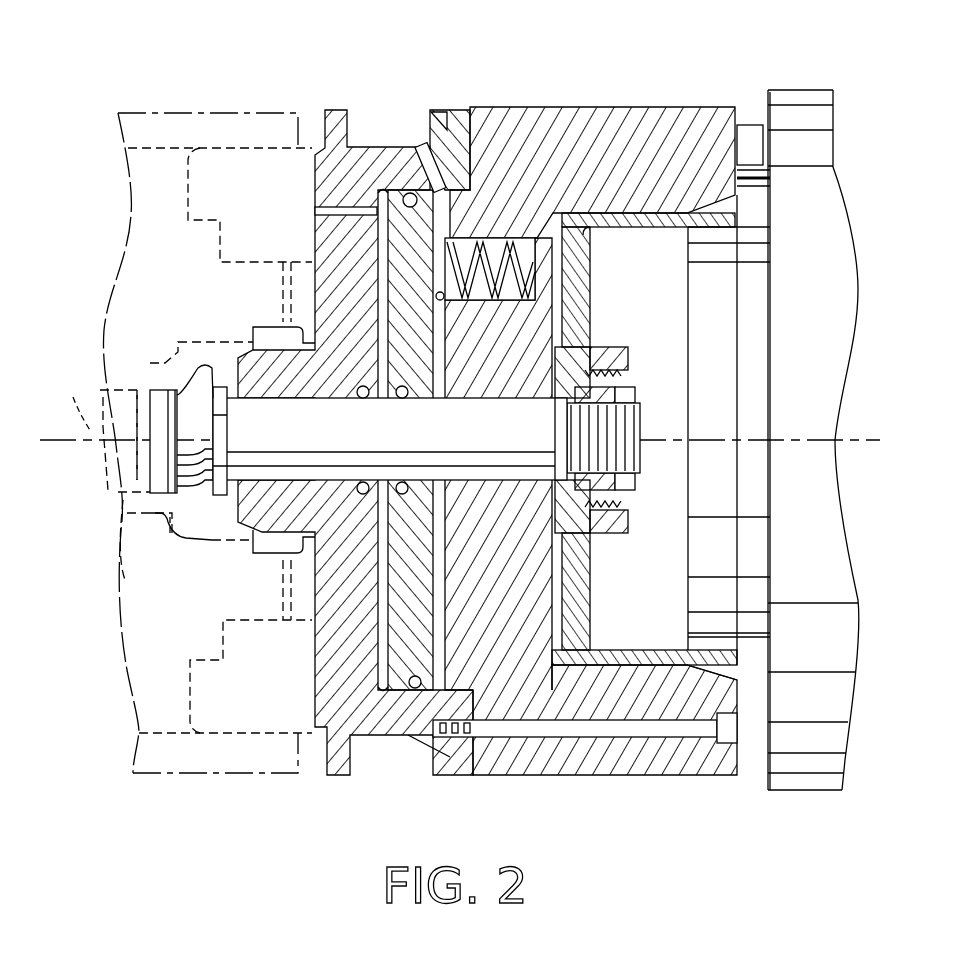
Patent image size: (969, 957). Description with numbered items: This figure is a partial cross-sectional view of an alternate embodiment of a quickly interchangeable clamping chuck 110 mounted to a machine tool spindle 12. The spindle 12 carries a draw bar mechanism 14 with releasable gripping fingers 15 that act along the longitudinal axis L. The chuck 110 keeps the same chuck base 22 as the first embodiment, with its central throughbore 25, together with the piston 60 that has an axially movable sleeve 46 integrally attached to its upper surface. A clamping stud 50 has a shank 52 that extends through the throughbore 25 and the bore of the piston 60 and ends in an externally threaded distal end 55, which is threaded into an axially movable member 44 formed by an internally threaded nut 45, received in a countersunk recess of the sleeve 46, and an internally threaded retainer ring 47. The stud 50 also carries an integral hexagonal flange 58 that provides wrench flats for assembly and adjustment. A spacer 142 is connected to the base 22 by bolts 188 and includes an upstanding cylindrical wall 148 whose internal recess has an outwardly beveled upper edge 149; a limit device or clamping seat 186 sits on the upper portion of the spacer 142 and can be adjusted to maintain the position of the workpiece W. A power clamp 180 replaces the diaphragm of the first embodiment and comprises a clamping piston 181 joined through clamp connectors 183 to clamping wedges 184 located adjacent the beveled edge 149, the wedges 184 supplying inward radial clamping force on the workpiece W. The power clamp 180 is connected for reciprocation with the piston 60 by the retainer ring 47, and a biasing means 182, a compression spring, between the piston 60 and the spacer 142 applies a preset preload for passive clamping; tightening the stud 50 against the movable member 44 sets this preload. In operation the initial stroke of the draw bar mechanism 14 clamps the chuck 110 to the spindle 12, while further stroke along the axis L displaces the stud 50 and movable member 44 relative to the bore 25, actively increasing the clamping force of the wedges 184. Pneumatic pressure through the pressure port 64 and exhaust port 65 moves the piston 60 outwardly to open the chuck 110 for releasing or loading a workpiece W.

The clamping chuck 110 is at (500, 73).
The machine tool spindle 12 is at (125, 101).
The draw bar mechanism 14 is at (110, 489).
The releasable gripping devices or fingers 15 is at (169, 545).
The base or adapter 22 is at (355, 412).
The throughbore 25 is at (300, 405).
The axially movable member 44 is at (643, 454).
The internally threaded nut 45 is at (637, 398).
The sleeve 46 is at (494, 441).
The retainer ring 47 is at (628, 352).
The clamping stud 50 is at (324, 497).
The shank 52 is at (358, 471).
The externally threaded distal end 55 is at (637, 487).
The hexagonal portion flange 58 is at (224, 496).
The piston 60 is at (405, 440).
The pressure port 64 is at (332, 212).
The exhaust port 65 is at (418, 143).
The spacer 142 is at (629, 434).
The upstanding cylindrical wall 148 is at (695, 143).
The outwardly beveled upper edge 149 is at (725, 668).
The power clamp 180 is at (661, 430).
The clamping piston 181 is at (588, 326).
The biasing means 182 is at (464, 237).
The clamp connectors 183 is at (637, 655).
The clamping wedges 184 is at (780, 423).
The limit device or clamping seat 186 is at (751, 132).
The bolts 188 is at (598, 730).
The workpiece W is at (815, 765).
The longitudinal axis L is at (73, 407).